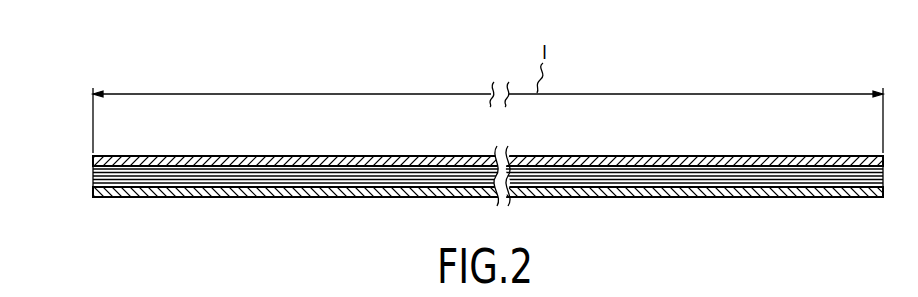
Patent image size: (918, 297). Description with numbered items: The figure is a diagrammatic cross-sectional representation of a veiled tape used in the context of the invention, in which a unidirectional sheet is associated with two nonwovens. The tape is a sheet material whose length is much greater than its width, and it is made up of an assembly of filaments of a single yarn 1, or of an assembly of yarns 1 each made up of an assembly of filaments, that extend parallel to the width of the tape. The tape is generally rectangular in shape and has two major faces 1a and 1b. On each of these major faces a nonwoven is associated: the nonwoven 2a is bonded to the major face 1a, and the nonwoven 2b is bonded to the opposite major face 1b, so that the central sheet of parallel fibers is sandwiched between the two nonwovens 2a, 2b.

The yarn 1 is at (473, 130).
The major face 1a is at (205, 158).
The nonwoven 2a is at (278, 158).
The major face 1b is at (192, 198).
The nonwoven 2b is at (282, 198).